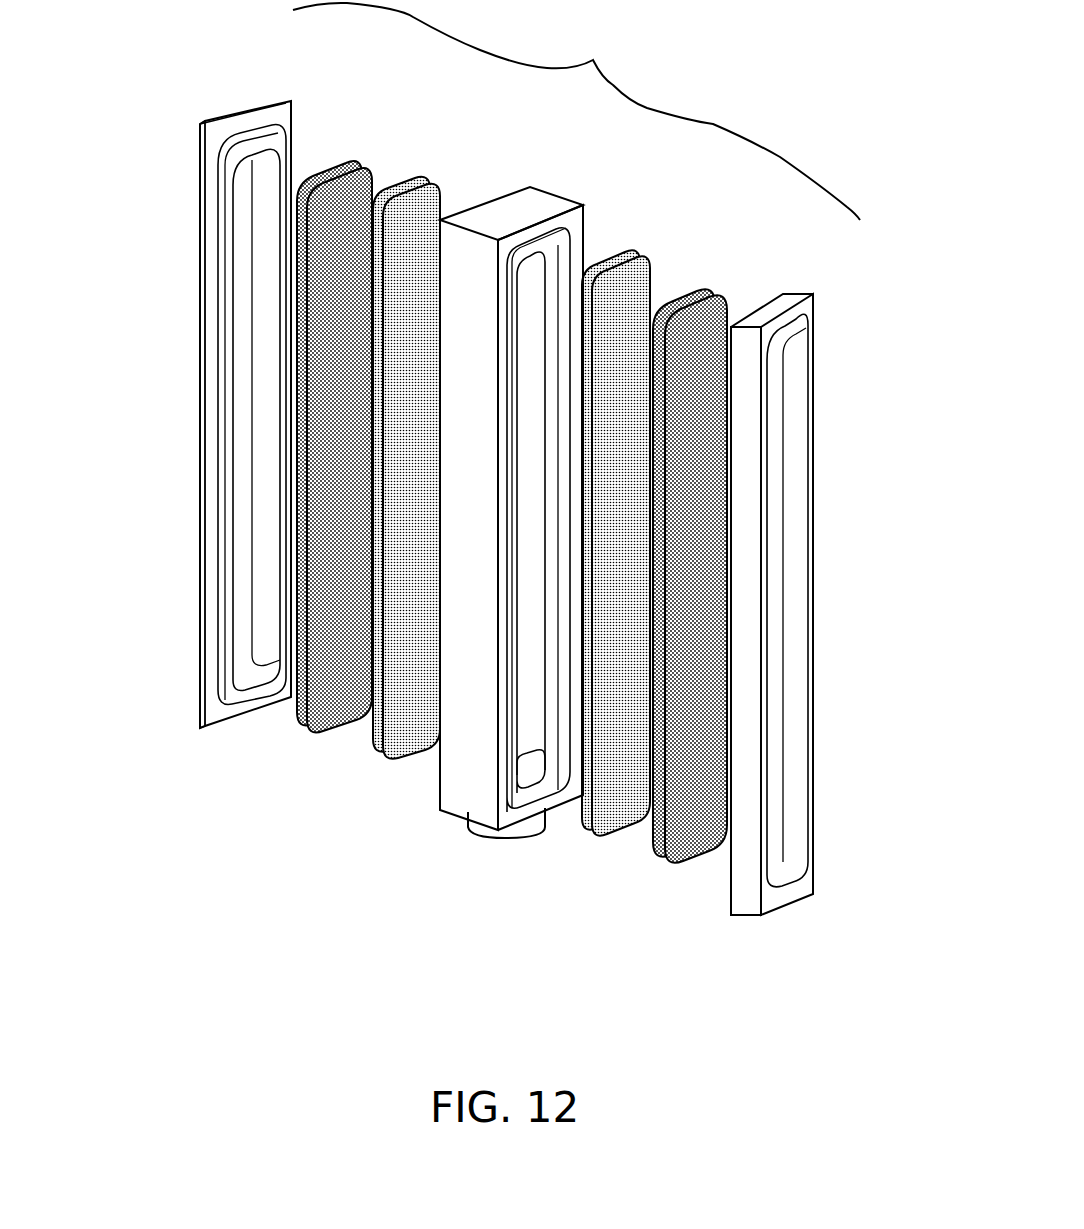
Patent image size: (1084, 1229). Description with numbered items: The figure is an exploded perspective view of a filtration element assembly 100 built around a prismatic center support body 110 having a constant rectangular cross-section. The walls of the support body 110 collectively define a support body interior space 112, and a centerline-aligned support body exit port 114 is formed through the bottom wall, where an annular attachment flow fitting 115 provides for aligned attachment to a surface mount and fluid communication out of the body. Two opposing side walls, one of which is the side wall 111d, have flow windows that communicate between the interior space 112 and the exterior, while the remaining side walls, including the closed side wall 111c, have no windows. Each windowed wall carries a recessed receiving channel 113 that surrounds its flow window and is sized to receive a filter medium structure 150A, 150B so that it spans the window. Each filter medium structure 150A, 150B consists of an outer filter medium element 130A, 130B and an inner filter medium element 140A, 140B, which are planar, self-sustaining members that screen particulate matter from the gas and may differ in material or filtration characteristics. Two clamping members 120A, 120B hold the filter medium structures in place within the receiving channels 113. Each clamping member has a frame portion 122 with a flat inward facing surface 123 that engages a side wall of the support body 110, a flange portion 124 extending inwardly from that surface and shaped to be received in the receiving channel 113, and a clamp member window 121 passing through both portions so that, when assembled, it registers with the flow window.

The filtration element assembly 100 is at (576, 111).
The center support body 110 is at (440, 780).
The closed side wall 111c is at (463, 776).
The side wall with flow window 111d is at (573, 227).
The support body interior space 112 is at (527, 300).
The receiving channel 113 is at (570, 262).
The support body exit port 114 is at (530, 780).
The attachment flow fitting 115 is at (497, 837).
The clamping member 120A is at (202, 645).
The clamping member 120B is at (813, 822).
The clamp member window 121 is at (778, 888).
The frame portion 122 is at (203, 527).
The flat inward facing surface 123 is at (213, 338).
The flange portion 124 is at (223, 475).
The outer filter medium element 130A is at (300, 743).
The outer filter medium element 130B is at (668, 860).
The inner filter medium element 140A is at (382, 760).
The inner filter medium element 140B is at (610, 837).
The filter medium structure 150A is at (251, 882).
The filter medium structure 150B is at (628, 1006).